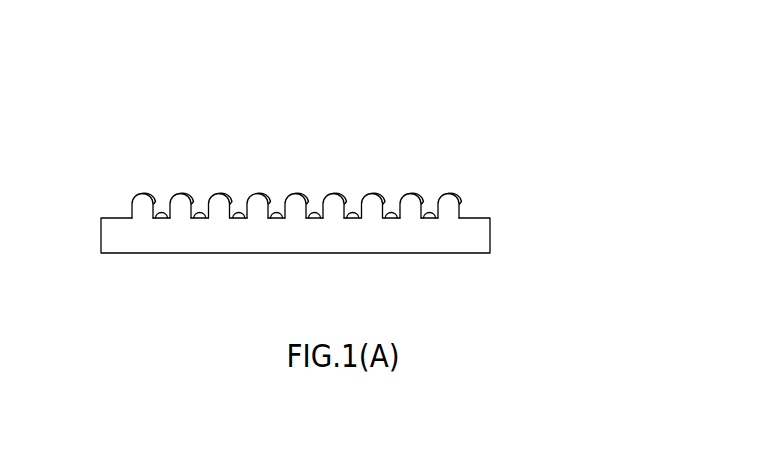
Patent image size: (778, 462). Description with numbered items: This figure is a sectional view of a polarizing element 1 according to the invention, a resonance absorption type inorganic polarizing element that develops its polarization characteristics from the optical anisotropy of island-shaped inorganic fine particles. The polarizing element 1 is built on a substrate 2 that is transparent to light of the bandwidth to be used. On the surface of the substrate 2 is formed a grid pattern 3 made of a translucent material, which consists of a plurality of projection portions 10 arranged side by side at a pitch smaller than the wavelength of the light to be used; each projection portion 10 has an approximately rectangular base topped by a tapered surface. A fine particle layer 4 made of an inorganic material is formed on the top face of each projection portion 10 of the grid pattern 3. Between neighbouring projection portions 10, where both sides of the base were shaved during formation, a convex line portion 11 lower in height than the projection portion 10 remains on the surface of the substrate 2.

The polarizing element 1 is at (50, 25).
The substrate 2 is at (117, 238).
The grid pattern 3 is at (290, 146).
The fine particle layer 4 is at (152, 197).
The projection portion 10 is at (138, 197).
The convex line portion 11 is at (201, 210).